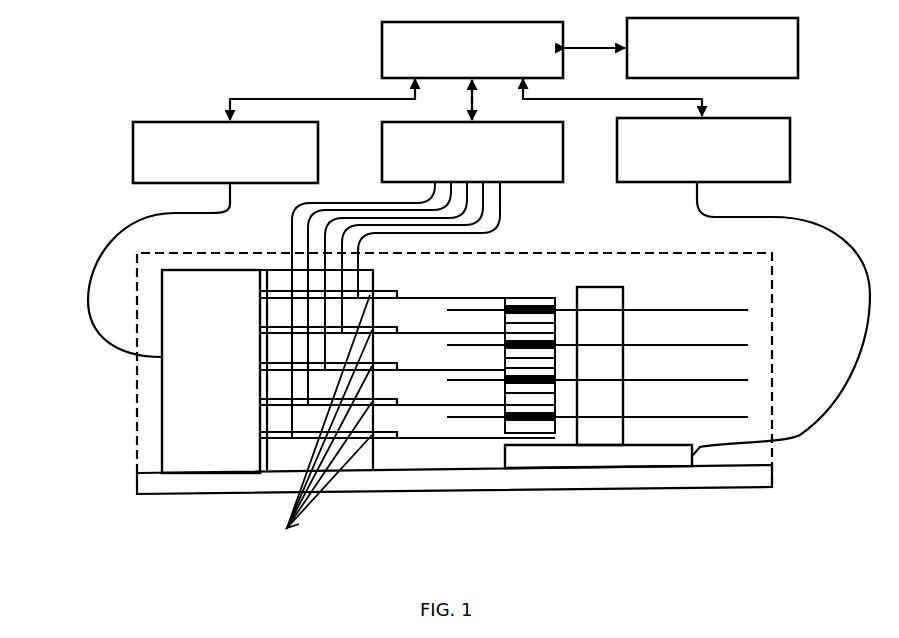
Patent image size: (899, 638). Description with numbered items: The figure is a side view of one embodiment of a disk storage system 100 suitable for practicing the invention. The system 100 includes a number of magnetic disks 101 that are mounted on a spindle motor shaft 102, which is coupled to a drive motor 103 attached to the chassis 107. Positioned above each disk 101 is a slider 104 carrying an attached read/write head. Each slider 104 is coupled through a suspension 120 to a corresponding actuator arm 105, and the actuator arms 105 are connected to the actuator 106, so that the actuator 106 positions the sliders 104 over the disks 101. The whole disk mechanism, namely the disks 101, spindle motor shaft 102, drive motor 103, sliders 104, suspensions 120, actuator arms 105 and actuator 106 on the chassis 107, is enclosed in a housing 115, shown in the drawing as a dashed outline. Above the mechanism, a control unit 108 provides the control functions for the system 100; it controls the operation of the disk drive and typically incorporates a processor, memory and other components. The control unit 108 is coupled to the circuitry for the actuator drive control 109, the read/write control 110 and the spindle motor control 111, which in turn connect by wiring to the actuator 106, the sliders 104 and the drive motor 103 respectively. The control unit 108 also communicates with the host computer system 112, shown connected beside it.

The storage system 100 is at (180, 518).
The magnetic disk 101 is at (748, 343).
The spindle motor shaft 102 is at (625, 293).
The drive motor 103 is at (625, 453).
The slider 104 is at (538, 308).
The actuator arm 105 is at (319, 425).
The actuator 106 is at (187, 442).
The chassis 107 is at (776, 478).
The control unit 108 is at (382, 50).
The actuator drive control 109 is at (133, 152).
The read/write control 110 is at (382, 150).
The spindle motor control 111 is at (791, 146).
The host computer system 112 is at (799, 44).
The housing 115 is at (137, 400).
The suspension 120 is at (467, 360).